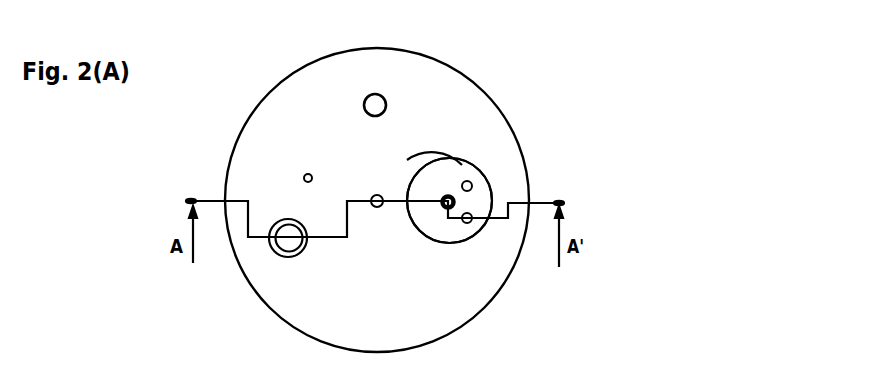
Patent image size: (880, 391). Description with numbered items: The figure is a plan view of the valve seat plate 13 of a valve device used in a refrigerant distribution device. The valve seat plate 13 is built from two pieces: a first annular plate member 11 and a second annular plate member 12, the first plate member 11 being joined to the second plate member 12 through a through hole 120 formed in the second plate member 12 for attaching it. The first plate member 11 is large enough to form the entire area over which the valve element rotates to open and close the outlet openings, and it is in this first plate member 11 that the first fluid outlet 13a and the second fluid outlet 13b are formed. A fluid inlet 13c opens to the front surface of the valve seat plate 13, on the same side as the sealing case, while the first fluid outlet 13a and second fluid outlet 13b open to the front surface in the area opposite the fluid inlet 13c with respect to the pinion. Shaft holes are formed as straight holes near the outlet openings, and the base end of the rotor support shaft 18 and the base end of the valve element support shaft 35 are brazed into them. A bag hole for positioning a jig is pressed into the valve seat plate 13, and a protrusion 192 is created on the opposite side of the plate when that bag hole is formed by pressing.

The first annular plate member 11 is at (462, 165).
The second annular plate member 12 is at (433, 88).
The valve seat plate 13 is at (524, 14).
The first fluid outlet 13a is at (472, 184).
The second fluid outlet 13b is at (470, 224).
The fluid inlet 13c is at (275, 251).
The rotor support shaft 18 is at (371, 197).
The valve element support shaft 35 is at (446, 208).
The through hole 120 is at (427, 160).
The protrusion 192 is at (362, 97).